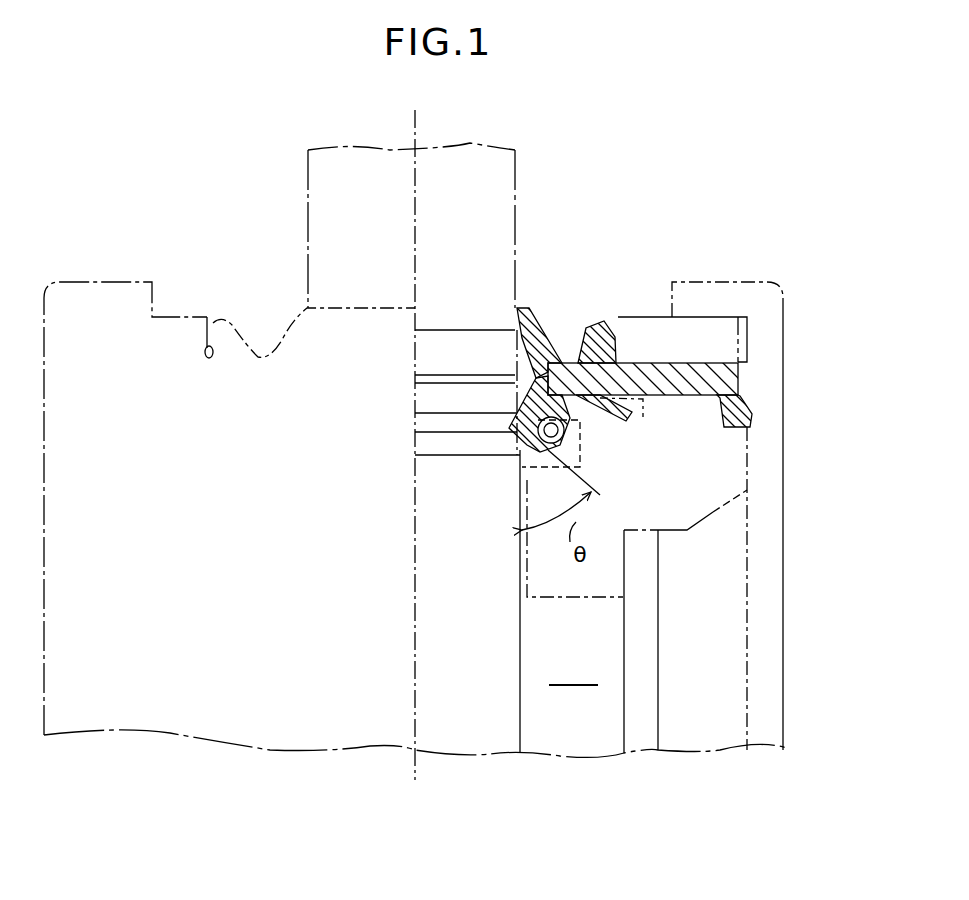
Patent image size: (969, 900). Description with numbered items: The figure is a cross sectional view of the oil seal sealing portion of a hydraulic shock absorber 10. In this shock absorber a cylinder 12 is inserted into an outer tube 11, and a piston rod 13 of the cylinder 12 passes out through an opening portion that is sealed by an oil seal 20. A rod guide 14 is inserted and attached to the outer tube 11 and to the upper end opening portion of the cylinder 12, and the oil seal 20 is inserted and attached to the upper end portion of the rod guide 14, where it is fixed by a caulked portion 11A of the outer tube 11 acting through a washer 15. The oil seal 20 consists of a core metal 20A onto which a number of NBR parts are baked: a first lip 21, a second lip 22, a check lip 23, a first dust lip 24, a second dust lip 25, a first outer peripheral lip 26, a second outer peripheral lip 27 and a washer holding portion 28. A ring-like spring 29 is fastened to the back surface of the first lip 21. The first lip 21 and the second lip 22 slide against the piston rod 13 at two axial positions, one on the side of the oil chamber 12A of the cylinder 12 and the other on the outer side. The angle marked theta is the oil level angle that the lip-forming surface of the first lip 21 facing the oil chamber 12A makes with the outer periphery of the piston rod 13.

The hydraulic shock absorber 10 is at (219, 190).
The outer tube 11 is at (787, 620).
The caulked portion 11A is at (706, 282).
The cylinder 12 is at (658, 727).
The oil chamber 12A is at (572, 601).
The piston rod 13 is at (515, 175).
The rod guide 14 is at (713, 528).
The washer 15 is at (747, 330).
The oil seal 20 is at (668, 356).
The core metal 20A is at (622, 335).
The first lip 21 is at (510, 432).
The second lip 22 is at (510, 408).
The check lip 23 is at (630, 418).
The first dust lip 24 is at (517, 310).
The second dust lip 25 is at (515, 335).
The first outer peripheral lip 26 is at (745, 368).
The second outer peripheral lip 27 is at (752, 418).
The washer holding portion 28 is at (600, 330).
The ring-like spring 29 is at (565, 443).